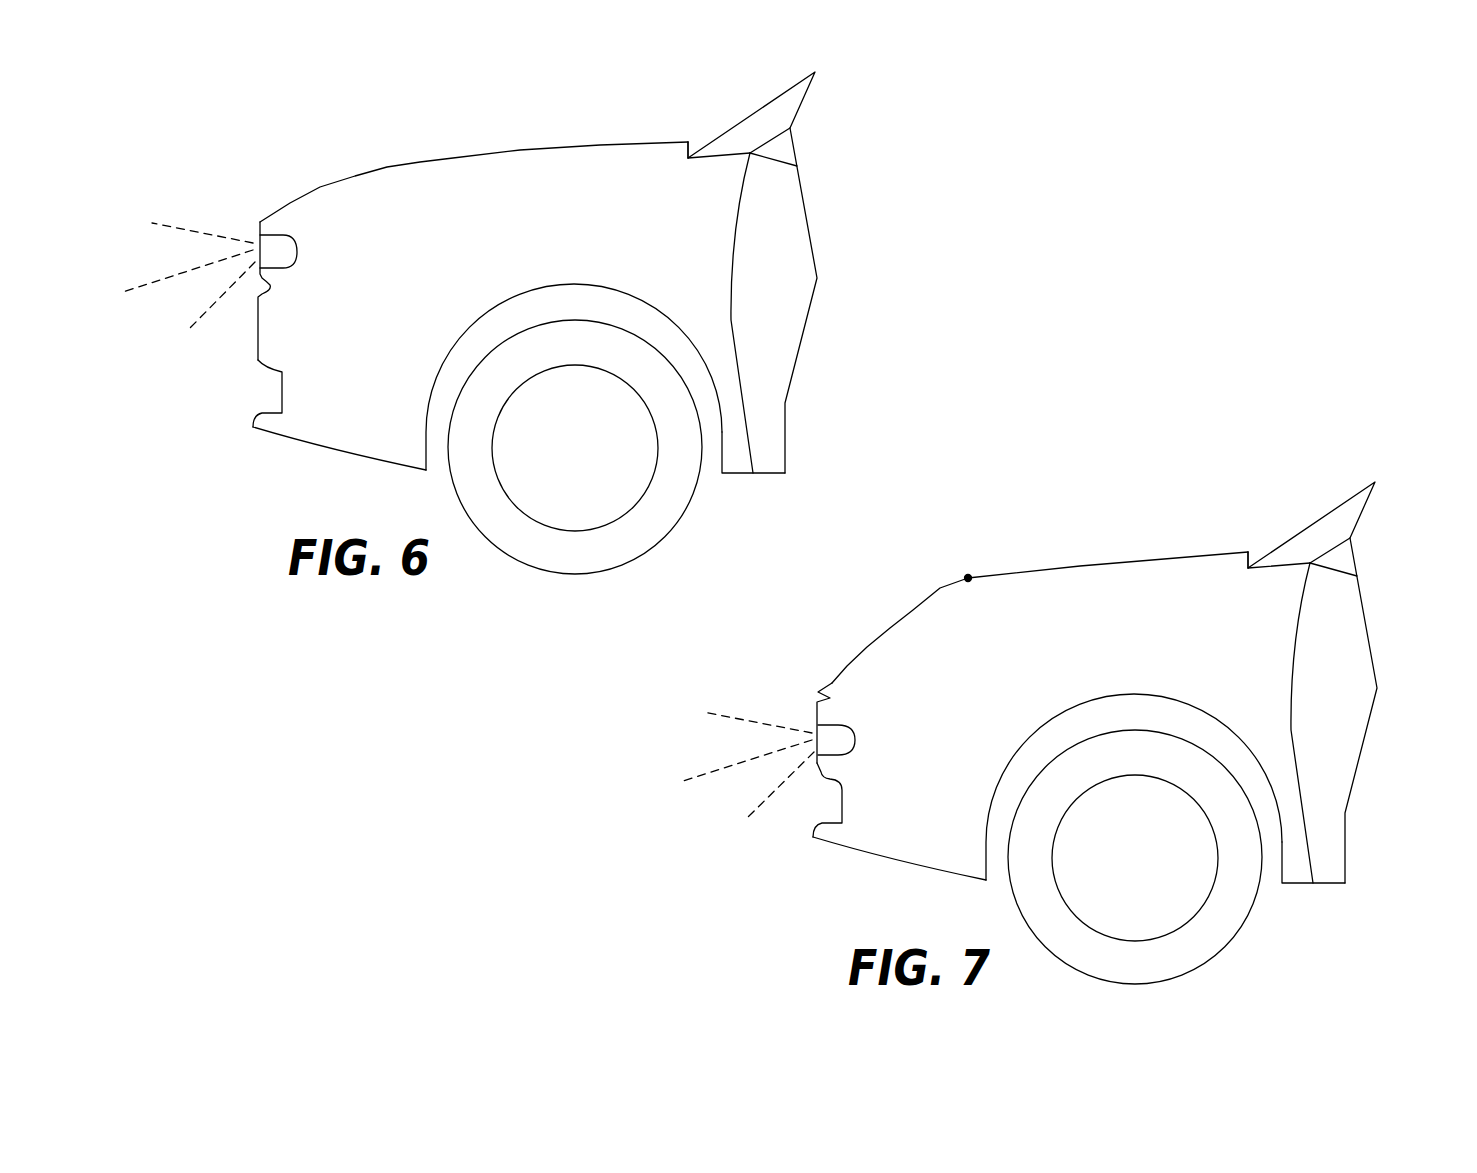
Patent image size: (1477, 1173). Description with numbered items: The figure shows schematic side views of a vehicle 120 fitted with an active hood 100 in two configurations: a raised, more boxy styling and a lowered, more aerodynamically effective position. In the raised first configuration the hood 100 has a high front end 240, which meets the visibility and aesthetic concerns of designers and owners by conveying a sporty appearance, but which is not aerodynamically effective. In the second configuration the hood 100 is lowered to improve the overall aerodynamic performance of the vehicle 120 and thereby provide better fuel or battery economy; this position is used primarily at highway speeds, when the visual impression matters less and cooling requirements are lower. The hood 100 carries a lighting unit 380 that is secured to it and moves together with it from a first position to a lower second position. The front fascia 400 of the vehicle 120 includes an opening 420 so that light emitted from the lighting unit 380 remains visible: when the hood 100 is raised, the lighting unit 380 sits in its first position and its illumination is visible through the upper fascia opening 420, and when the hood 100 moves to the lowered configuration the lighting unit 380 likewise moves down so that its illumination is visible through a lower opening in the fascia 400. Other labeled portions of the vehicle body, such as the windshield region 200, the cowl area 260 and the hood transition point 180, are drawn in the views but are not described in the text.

In FIG. 6, the active hood 100 is at (440, 161).
In FIG. 7, the active hood 100 is at (1028, 571).
In FIG. 6, the vehicle 120 is at (803, 195).
In FIG. 7, the vehicle 120 is at (1363, 605).
In FIG. 7, the hood transition point 180 is at (966, 577).
In FIG. 6, the windshield 200 is at (748, 114).
In FIG. 7, the windshield 200 is at (1308, 524).
In FIG. 6, the front end of the hood 240 is at (273, 210).
In FIG. 7, the front end of the hood 240 is at (829, 681).
In FIG. 6, the cowl 260 is at (670, 140).
In FIG. 7, the cowl 260 is at (1230, 550).
In FIG. 6, the lighting unit 380 is at (285, 254).
In FIG. 7, the lighting unit 380 is at (842, 742).
In FIG. 6, the front fascia 400 is at (256, 276).
In FIG. 7, the front fascia 400 is at (817, 766).
In FIG. 6, the upper fascia opening 420 is at (266, 241).
In FIG. 7, the upper fascia opening 420 is at (822, 732).